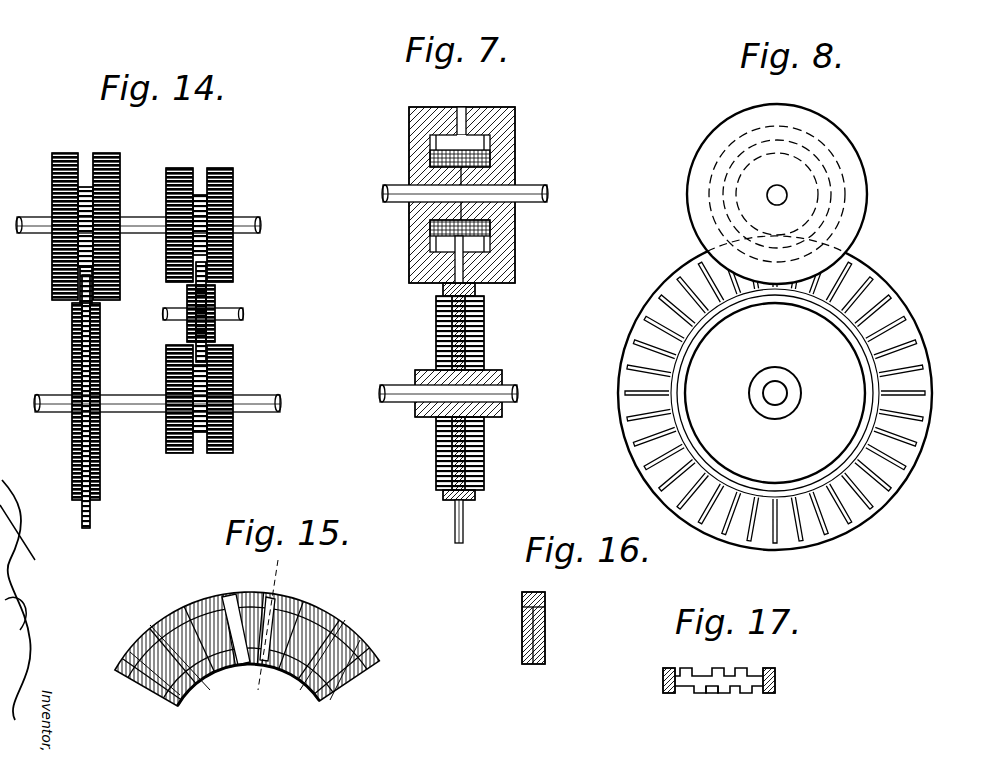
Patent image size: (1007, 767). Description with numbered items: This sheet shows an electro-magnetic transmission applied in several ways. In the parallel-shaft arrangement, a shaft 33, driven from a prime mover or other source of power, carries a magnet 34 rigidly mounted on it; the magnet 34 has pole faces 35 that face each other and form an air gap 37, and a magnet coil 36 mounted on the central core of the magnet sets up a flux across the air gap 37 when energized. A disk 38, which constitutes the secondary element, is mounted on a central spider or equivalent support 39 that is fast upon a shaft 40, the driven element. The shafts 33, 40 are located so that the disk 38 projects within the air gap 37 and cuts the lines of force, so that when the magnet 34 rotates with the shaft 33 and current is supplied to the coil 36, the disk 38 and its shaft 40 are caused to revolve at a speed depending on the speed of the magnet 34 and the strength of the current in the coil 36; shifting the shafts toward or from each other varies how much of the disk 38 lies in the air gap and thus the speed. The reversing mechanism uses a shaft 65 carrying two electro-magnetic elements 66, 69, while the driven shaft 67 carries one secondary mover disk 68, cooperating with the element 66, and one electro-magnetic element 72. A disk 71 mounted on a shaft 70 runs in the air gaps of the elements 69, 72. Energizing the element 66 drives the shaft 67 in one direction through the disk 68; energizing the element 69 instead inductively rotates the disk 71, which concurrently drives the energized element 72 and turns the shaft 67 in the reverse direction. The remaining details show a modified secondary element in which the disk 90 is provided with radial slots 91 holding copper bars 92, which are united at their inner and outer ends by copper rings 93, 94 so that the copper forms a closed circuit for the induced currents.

In FIG. 7, the shaft 33 is at (540, 187).
In FIG. 8, the shaft 33 is at (777, 185).
In FIG. 7, the magnet 34 is at (409, 141).
In FIG. 8, the magnet 34 is at (857, 155).
In FIG. 7, the pole faces 35 is at (452, 110).
In FIG. 7, the magnet coil 36 is at (488, 228).
In FIG. 7, the air gap 37 is at (461, 106).
In FIG. 7, the disk 38 is at (464, 517).
In FIG. 8, the disk 38 is at (877, 497).
In FIG. 7, the spider 39 is at (487, 462).
In FIG. 8, the spider 39 is at (775, 393).
In FIG. 7, the shaft 40 is at (513, 385).
In FIG. 8, the shaft 40 is at (778, 390).
In FIG. 14, the shaft 65 is at (255, 212).
In FIG. 14, the electro-magnetic element 66 is at (120, 162).
In FIG. 14, the driven shaft 67 is at (131, 395).
In FIG. 14, the secondary mover disk 68 is at (68, 506).
In FIG. 14, the electro-magnetic element 69 is at (234, 273).
In FIG. 14, the shaft 70 is at (243, 314).
In FIG. 14, the disk 71 is at (213, 283).
In FIG. 14, the electro-magnetic element 72 is at (233, 445).
In FIG. 15, the disk 90 is at (325, 640).
In FIG. 16, the disk 90 is at (547, 620).
In FIG. 17, the disk 90 is at (702, 695).
In FIG. 17, the radial slots 91 is at (718, 696).
In FIG. 15, the copper bars 92 is at (273, 612).
In FIG. 15, the copper ring 93 is at (200, 600).
In FIG. 16, the copper ring 93 is at (530, 592).
In FIG. 15, the copper ring 94 is at (226, 667).
In FIG. 16, the copper ring 94 is at (533, 665).